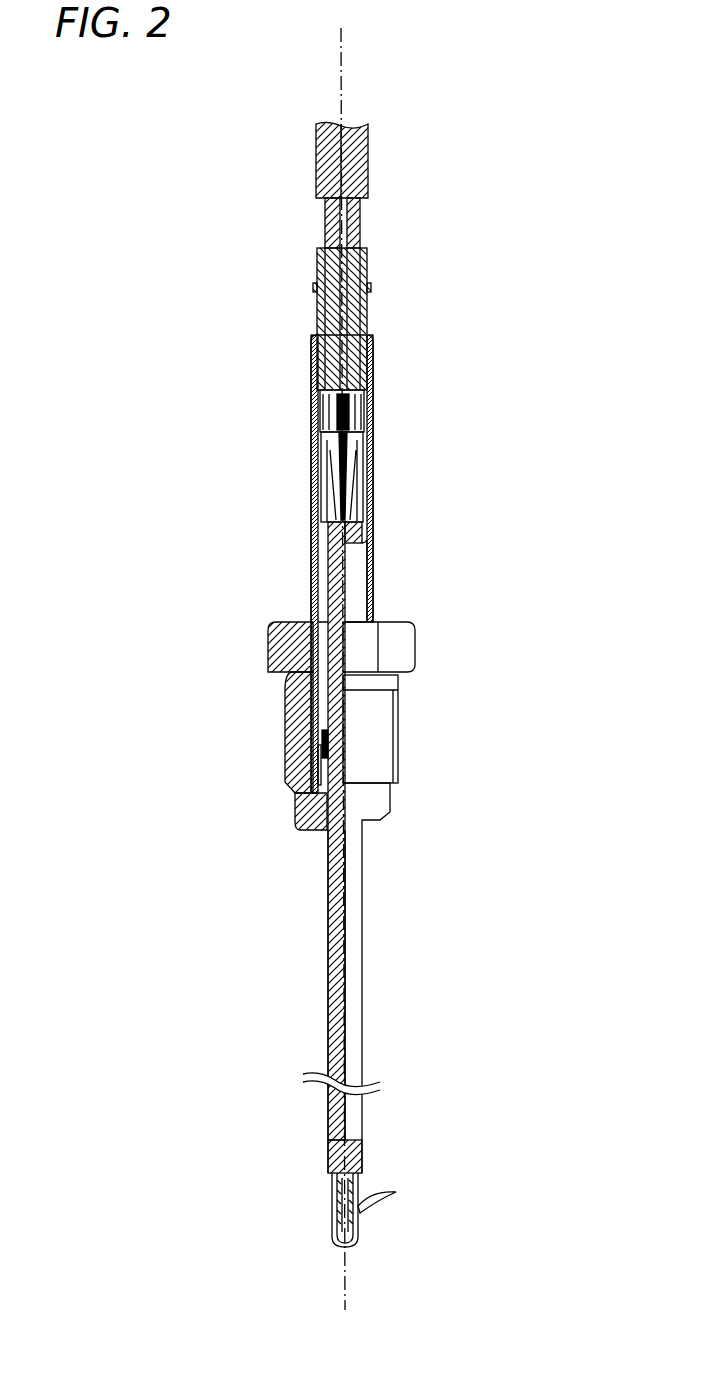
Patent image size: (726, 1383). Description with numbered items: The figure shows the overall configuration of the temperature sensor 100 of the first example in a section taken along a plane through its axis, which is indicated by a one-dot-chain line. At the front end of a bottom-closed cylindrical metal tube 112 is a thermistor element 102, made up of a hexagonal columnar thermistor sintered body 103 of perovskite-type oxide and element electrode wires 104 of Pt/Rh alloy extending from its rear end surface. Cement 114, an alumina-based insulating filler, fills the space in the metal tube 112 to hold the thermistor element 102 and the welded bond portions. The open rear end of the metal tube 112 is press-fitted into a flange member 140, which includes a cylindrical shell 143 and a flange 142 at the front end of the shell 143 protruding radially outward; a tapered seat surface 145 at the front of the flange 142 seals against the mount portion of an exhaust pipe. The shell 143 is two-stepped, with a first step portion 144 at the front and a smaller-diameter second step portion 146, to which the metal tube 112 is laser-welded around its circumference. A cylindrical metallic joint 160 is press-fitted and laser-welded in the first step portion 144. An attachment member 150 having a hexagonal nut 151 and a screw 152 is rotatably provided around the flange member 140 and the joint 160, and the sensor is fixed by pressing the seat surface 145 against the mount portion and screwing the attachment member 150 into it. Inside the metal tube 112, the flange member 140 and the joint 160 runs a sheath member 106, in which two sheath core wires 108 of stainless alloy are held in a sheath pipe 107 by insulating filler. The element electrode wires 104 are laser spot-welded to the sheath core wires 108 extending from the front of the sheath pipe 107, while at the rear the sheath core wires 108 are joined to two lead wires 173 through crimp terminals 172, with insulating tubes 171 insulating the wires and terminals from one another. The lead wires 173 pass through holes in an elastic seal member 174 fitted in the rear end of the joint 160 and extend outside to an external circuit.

The temperature sensor 100 is at (176, 145).
The thermistor element 102 is at (275, 1235).
The thermistor sintered body 103 is at (340, 1245).
The element electrode wire 104 is at (340, 1220).
The sheath member 106 is at (330, 1150).
The sheath pipe 107 is at (328, 1022).
The sheath core wire 108 is at (330, 500).
The metal tube 112 is at (330, 1114).
The cement 114 is at (395, 1196).
The flange member 140 is at (220, 757).
The flange 142 is at (298, 810).
The shell 143 is at (247, 744).
The first step portion 144 is at (320, 756).
The seat surface 145 is at (305, 838).
The second step portion 146 is at (324, 736).
The attachment member 150 is at (409, 726).
The hexagonal nut 151 is at (415, 641).
The screw 152 is at (398, 700).
The joint 160 is at (312, 556).
The insulating tube 171 is at (348, 470).
The crimp terminal 172 is at (322, 432).
The lead wire 173 is at (325, 222).
The elastic seal member 174 is at (367, 262).